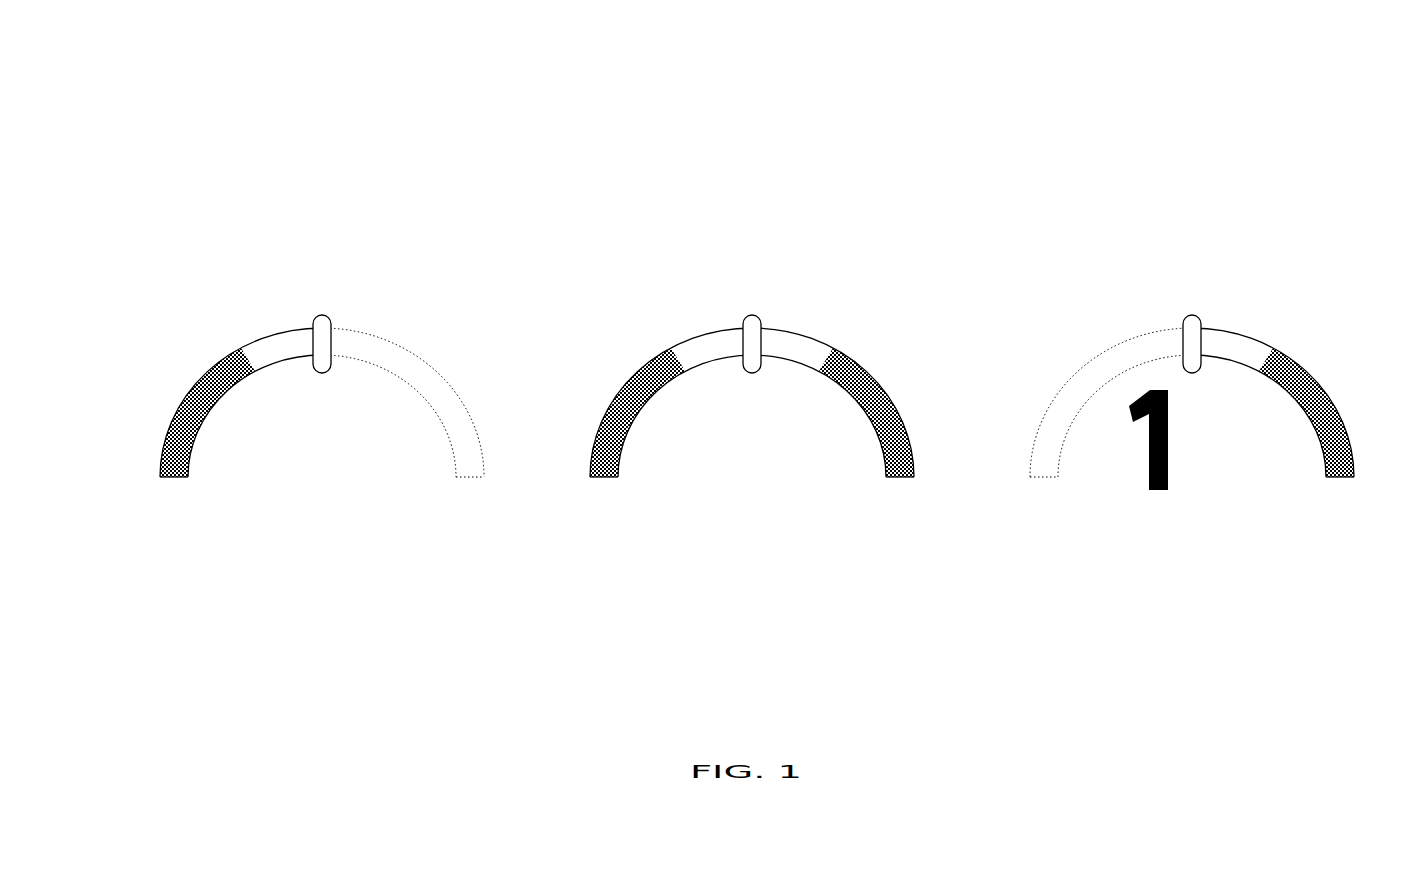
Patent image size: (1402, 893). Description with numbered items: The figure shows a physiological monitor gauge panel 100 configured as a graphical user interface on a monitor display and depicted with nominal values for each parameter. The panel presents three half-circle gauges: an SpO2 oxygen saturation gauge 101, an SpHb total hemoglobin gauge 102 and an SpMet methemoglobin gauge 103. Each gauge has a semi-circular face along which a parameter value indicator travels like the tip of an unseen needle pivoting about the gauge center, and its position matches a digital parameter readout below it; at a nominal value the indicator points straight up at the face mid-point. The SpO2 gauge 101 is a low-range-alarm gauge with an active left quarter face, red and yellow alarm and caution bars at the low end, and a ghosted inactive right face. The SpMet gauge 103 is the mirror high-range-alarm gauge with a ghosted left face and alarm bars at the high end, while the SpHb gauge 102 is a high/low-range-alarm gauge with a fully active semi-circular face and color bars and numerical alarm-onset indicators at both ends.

The physiological monitor gauge panel 100 is at (742, 72).
The SpO2 gauge 101 is at (317, 200).
The SpHb gauge 102 is at (750, 201).
The SpMet gauge 103 is at (1190, 201).